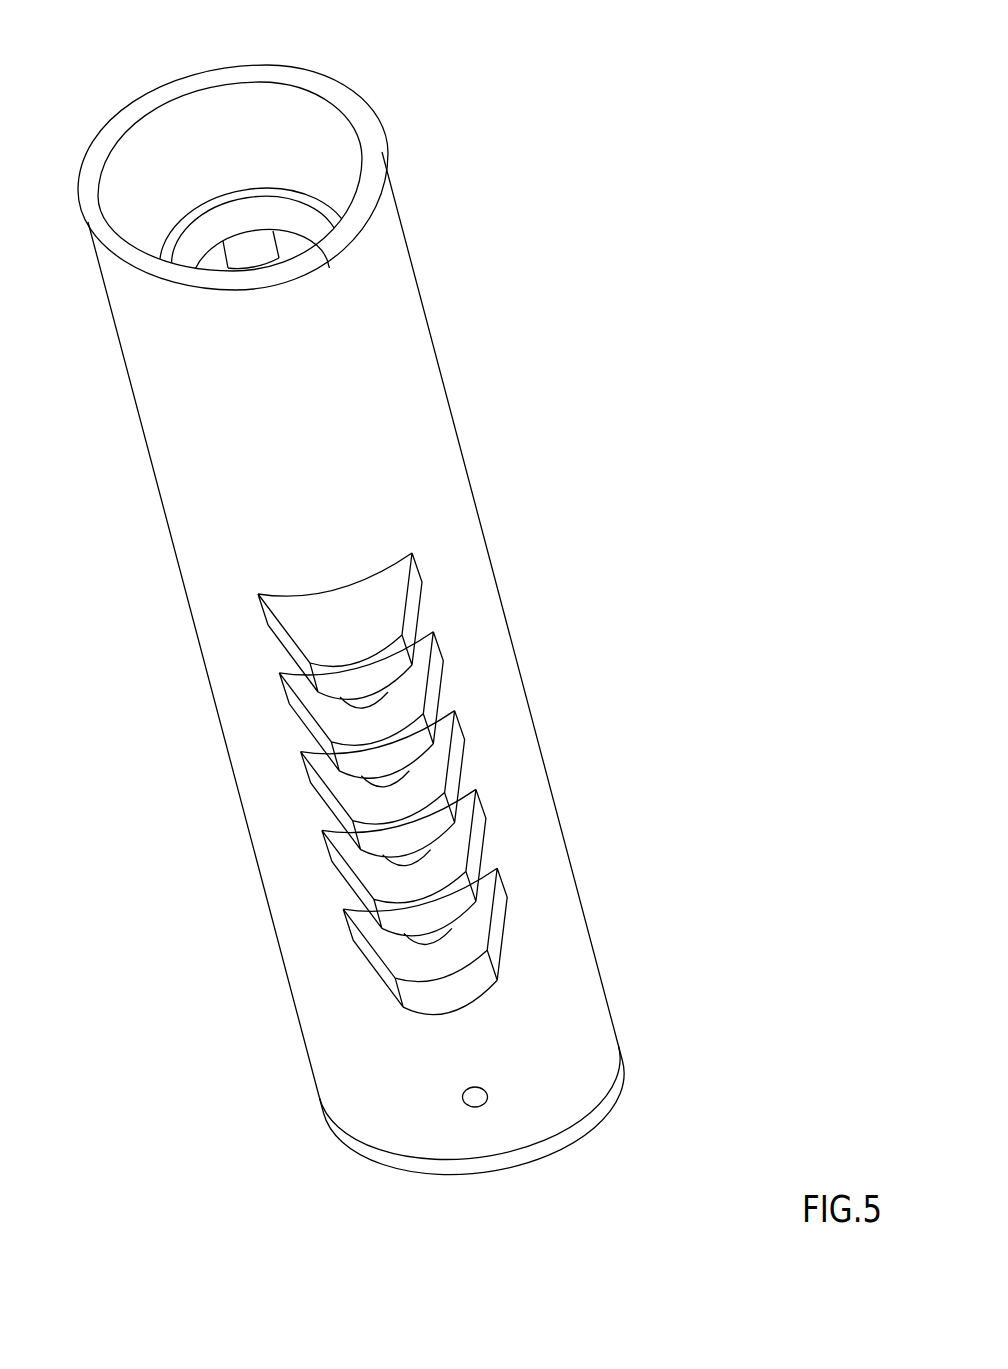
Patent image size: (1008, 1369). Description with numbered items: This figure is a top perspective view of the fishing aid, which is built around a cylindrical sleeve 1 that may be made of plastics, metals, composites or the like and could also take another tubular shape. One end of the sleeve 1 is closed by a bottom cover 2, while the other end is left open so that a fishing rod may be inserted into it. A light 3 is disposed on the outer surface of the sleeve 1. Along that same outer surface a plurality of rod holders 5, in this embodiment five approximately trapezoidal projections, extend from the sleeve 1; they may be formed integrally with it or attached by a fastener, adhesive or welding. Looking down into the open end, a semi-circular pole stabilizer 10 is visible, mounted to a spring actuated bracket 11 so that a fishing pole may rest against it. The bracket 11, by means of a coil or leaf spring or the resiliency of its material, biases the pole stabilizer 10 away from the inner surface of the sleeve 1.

The cylindrical sleeve 1 is at (448, 397).
The bottom cover 2 is at (363, 1157).
The light 3 is at (482, 1107).
The rod holders 5 is at (460, 730).
The pole stabilizer 10 is at (248, 190).
The spring actuated bracket 11 is at (223, 260).